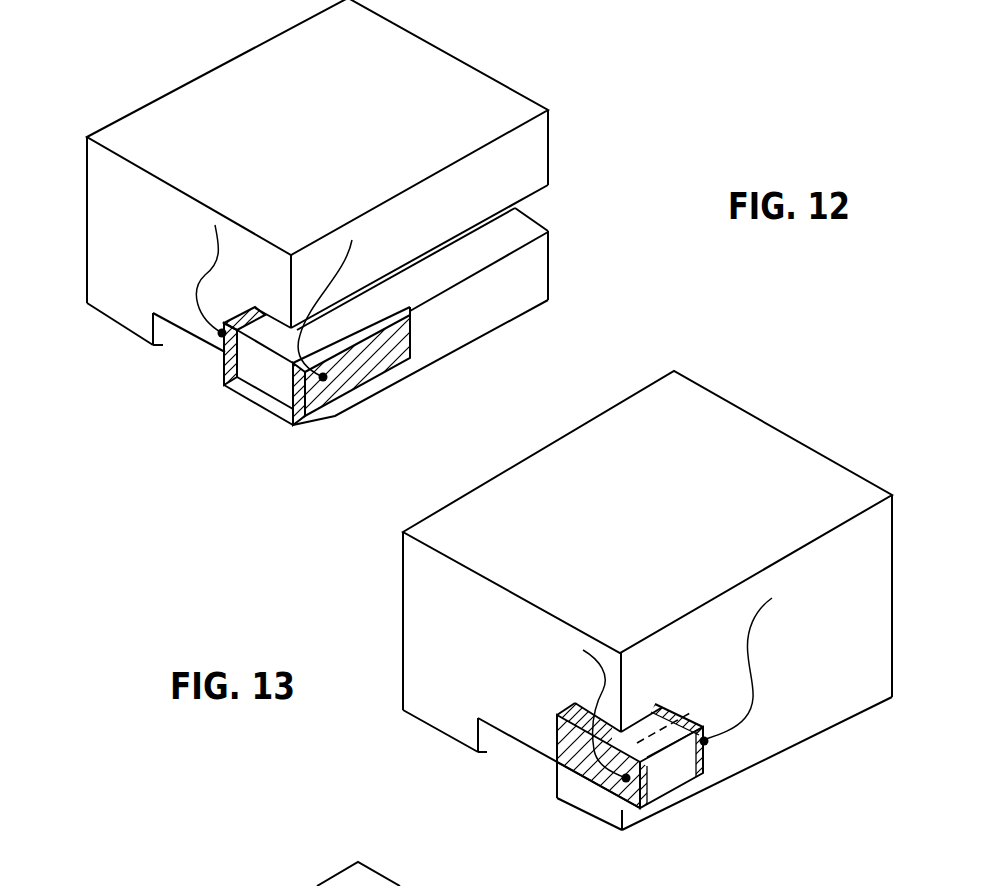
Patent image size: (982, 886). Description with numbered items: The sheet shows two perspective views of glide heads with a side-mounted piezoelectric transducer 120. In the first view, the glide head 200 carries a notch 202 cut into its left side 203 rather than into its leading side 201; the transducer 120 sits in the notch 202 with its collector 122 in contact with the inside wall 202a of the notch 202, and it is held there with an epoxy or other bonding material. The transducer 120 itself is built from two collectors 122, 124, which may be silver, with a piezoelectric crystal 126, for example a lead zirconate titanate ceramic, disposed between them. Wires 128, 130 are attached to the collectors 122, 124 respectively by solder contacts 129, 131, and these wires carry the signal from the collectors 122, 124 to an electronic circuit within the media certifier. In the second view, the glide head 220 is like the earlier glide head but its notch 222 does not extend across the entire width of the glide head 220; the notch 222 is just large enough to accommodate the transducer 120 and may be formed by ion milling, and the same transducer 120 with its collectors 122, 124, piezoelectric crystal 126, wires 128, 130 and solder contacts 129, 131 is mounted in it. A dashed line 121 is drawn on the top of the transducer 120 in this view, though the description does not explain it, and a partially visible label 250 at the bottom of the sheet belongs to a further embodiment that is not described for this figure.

In FIG. 12, the glide head 200 is at (556, 38).
In FIG. 12, the leading side 201 is at (102, 183).
In FIG. 12, the notch 202 is at (559, 219).
In FIG. 12, the inside wall 202a is at (513, 208).
In FIG. 12, the left side 203 is at (537, 156).
In FIG. 12, the transducer 120 is at (235, 387).
In FIG. 13, the transducer 120 is at (658, 683).
In FIG. 13, the boundary line on top surface 121 is at (698, 697).
In FIG. 13, the collector 122 is at (706, 778).
In FIG. 13, the collector 124 is at (647, 806).
In FIG. 13, the piezoelectric crystal 126 is at (673, 793).
In FIG. 13, the wire 128 is at (752, 683).
In FIG. 13, the solder contact 129 is at (708, 740).
In FIG. 13, the wire 130 is at (583, 652).
In FIG. 13, the solder contact 131 is at (609, 791).
In FIG. 13, the glide head 220 is at (338, 570).
In FIG. 13, the notch 222 is at (568, 702).
In FIG. 13, the assembly 250 is at (140, 885).